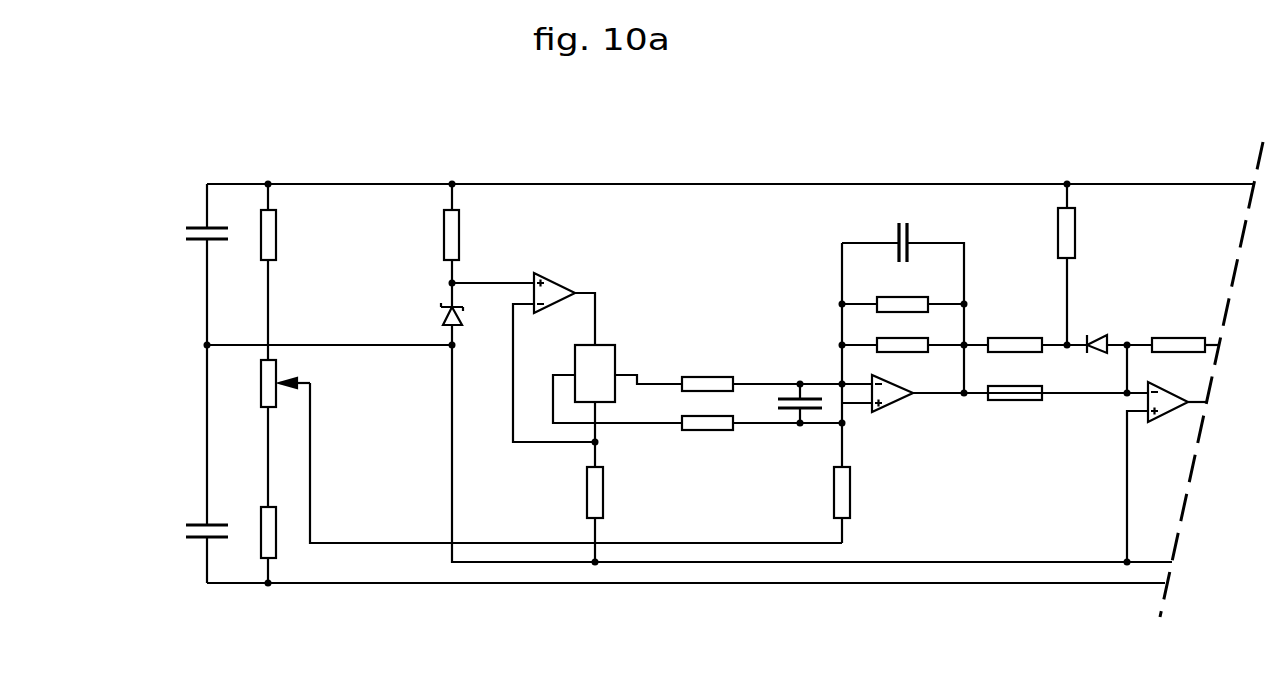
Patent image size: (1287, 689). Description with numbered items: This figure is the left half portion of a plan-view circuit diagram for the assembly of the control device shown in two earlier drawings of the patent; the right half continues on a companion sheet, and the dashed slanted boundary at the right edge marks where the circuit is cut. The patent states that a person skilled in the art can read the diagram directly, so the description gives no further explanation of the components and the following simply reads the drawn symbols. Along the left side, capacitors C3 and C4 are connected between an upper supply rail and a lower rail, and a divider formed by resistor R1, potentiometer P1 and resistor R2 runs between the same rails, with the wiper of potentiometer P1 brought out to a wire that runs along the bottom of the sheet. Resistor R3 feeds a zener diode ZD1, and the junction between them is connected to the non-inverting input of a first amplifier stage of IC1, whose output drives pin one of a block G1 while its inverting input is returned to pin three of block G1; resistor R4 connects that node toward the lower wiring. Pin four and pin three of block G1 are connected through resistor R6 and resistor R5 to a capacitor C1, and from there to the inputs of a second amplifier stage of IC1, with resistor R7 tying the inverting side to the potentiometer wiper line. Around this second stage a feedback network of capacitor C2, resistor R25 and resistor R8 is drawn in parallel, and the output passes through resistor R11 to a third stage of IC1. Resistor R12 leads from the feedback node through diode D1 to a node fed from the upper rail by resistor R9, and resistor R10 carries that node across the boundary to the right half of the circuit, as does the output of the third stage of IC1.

The capacitor C3 is at (184, 220).
The capacitor C4 is at (184, 517).
The resistor R1 is at (285, 272).
The potentiometer P1 is at (551, 445).
The resistor R2 is at (282, 495).
The resistor R3 is at (469, 245).
The zener diode ZD1 is at (471, 315).
The operational amplifier IC1 is at (868, 338).
The oscillator/gate G1 is at (617, 394).
The resistor R6 is at (762, 365).
The resistor R5 is at (762, 443).
The capacitor C1 is at (800, 385).
The resistor R4 is at (612, 514).
The resistor R7 is at (859, 505).
The capacitor C2 is at (903, 224).
The resistor R25 is at (903, 288).
The resistor R8 is at (915, 361).
The resistor R12 is at (1037, 325).
The resistor R11 is at (1015, 411).
The resistor R9 is at (1083, 264).
The diode D1 is at (1118, 326).
The resistor R10 is at (1185, 324).